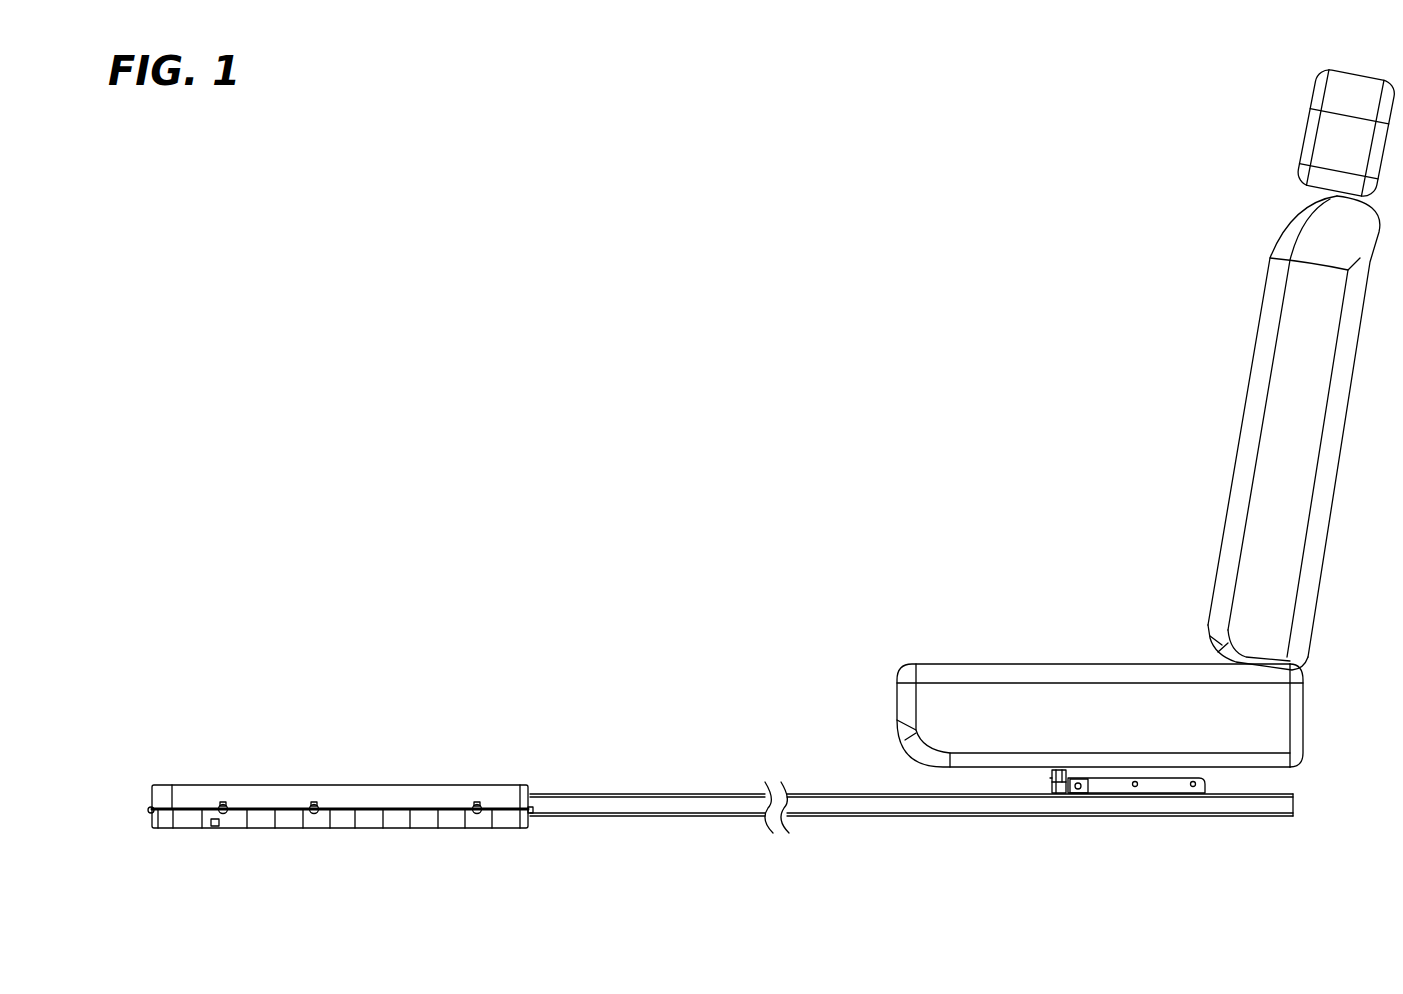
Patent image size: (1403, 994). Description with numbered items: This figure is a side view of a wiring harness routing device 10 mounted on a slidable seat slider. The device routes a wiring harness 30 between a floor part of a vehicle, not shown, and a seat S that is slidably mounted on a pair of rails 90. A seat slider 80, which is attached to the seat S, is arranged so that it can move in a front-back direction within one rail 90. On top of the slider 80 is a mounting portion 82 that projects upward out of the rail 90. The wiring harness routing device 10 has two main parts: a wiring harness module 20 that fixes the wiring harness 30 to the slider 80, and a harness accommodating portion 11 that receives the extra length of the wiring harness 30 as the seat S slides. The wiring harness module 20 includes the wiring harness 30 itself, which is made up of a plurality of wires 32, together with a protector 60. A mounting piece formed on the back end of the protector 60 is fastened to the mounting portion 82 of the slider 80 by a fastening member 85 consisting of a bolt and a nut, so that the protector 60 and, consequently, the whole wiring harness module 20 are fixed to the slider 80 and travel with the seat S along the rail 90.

The seat S is at (1303, 463).
The wiring harness routing device 10 is at (338, 757).
The harness accommodating portion 11 is at (345, 800).
The wiring harness module 20 is at (1017, 828).
The wiring harness 30 is at (237, 859).
The wire 32 is at (216, 828).
The protector 60 is at (1050, 783).
The seat slider 80 is at (1136, 830).
The mounting portion 82 is at (1118, 790).
The fastening member 85 is at (1078, 800).
The rail 90 is at (855, 805).